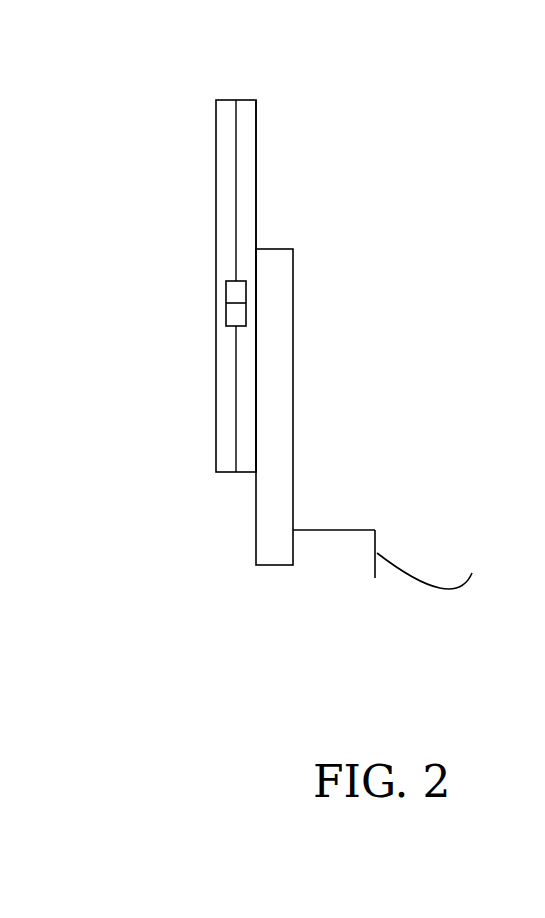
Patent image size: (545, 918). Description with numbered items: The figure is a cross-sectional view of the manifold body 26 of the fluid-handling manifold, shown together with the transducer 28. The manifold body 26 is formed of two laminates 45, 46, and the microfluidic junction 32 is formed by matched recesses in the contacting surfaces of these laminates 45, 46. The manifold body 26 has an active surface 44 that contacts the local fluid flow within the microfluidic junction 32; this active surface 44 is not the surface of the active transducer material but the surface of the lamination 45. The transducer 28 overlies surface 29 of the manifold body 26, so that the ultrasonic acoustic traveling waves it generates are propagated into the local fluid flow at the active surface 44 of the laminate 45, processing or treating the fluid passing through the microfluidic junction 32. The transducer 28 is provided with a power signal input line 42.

The manifold body 26 is at (230, 100).
The lamination 45 is at (255, 155).
The laminate 46 is at (225, 188).
The microfluidic junction 32 is at (232, 315).
The active surface 44 is at (253, 301).
The transducer 28 is at (278, 348).
The surface 29 is at (257, 410).
The power signal input line 42 is at (407, 559).